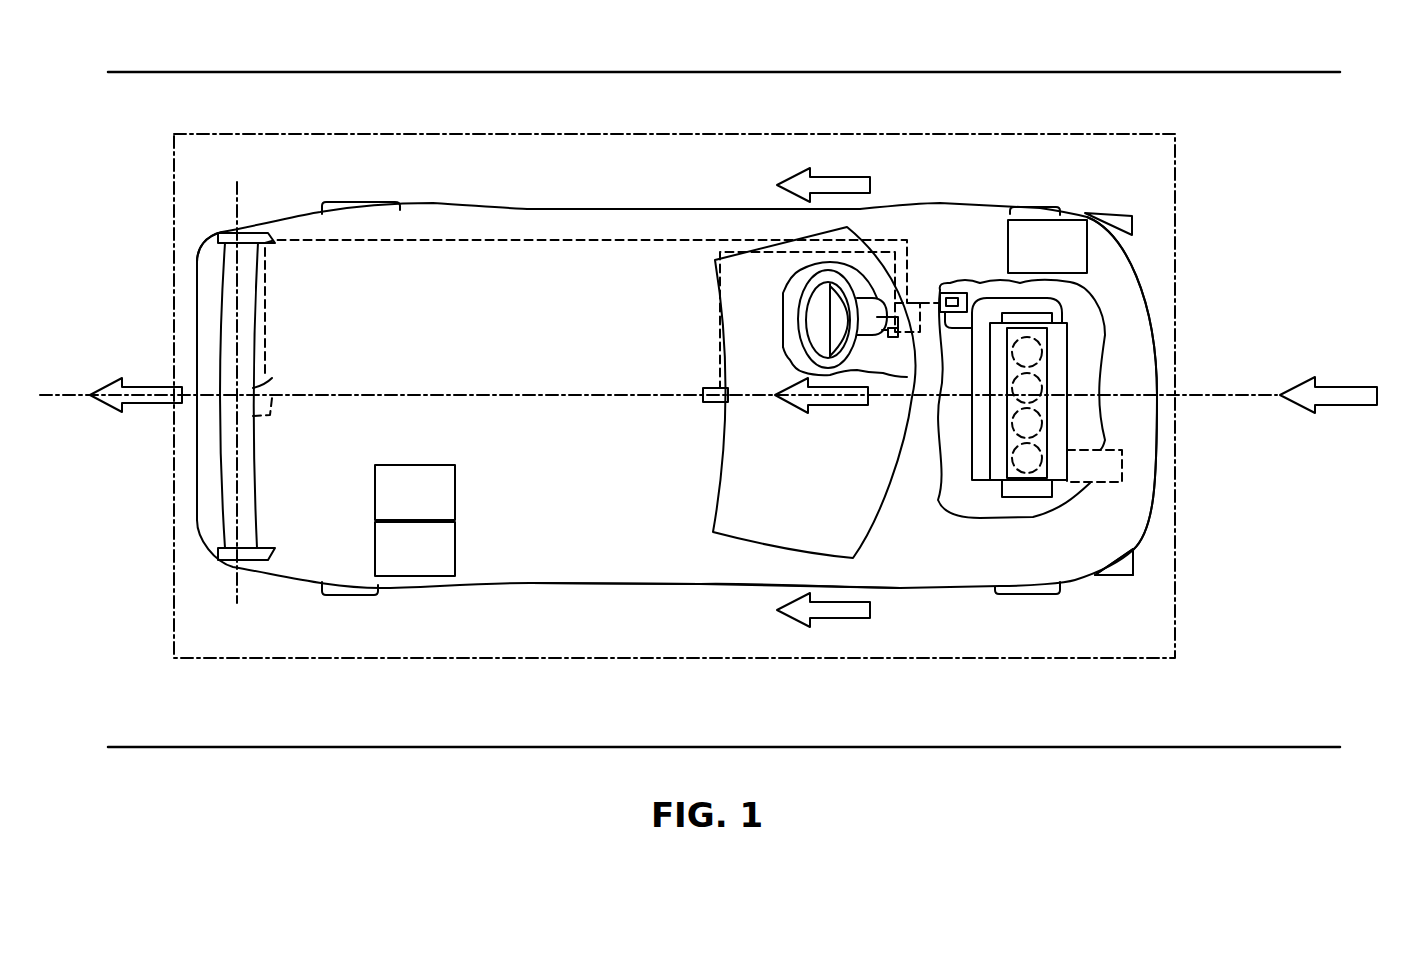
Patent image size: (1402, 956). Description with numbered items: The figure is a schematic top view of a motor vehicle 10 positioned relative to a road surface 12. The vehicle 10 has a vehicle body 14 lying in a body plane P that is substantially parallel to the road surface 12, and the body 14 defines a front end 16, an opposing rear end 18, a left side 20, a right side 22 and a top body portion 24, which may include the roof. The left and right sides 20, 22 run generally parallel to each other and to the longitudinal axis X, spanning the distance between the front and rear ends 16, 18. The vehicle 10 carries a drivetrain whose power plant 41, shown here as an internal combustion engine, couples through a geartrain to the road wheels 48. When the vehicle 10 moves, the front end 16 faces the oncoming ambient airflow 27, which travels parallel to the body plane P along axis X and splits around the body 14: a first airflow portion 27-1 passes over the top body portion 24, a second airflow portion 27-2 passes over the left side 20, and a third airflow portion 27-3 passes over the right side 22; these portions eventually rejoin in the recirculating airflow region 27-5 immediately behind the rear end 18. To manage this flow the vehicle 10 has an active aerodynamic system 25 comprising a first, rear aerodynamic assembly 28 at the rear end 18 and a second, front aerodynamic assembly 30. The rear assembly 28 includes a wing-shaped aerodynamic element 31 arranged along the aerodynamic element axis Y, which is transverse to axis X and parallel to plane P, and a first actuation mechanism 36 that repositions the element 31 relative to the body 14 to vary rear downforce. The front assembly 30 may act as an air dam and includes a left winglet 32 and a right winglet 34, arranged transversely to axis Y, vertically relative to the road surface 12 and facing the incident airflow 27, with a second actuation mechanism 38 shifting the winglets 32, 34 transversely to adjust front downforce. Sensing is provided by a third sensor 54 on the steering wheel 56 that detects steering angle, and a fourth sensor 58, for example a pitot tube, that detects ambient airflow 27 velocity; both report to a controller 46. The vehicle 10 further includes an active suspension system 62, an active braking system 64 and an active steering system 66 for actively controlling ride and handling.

The motor vehicle 10 is at (1205, 612).
The road surface 12 is at (674, 433).
The vehicle body 14 is at (603, 277).
The front end 16 is at (1153, 340).
The rear end 18 is at (197, 357).
The left side 20 is at (698, 217).
The right side 22 is at (682, 585).
The top body portion 24 is at (592, 325).
The active aerodynamic system 25 is at (215, 272).
The ambient airflow 27 is at (1338, 395).
The first airflow portion 27-1 is at (827, 407).
The second airflow portion 27-2 is at (823, 180).
The third airflow portion 27-3 is at (832, 623).
The recirculating airflow region 27-5 is at (150, 407).
The first aerodynamic assembly 28 is at (257, 487).
The second aerodynamic assembly 30 is at (1133, 562).
The aerodynamic element 31 is at (272, 378).
The first winglet 32 is at (1107, 213).
The second winglet 34 is at (1113, 575).
The first actuation mechanism 36 is at (275, 400).
The second actuation mechanism 38 is at (1122, 467).
The power plant 41 is at (1072, 340).
The controller 46 is at (948, 293).
The road wheels 48 is at (367, 203).
The third sensor 54 is at (893, 338).
The steering wheel 56 is at (783, 323).
The fourth sensor 58 is at (720, 403).
The active suspension system 62 is at (1047, 246).
The active braking system 64 is at (415, 492).
The active steering system 66 is at (415, 549).